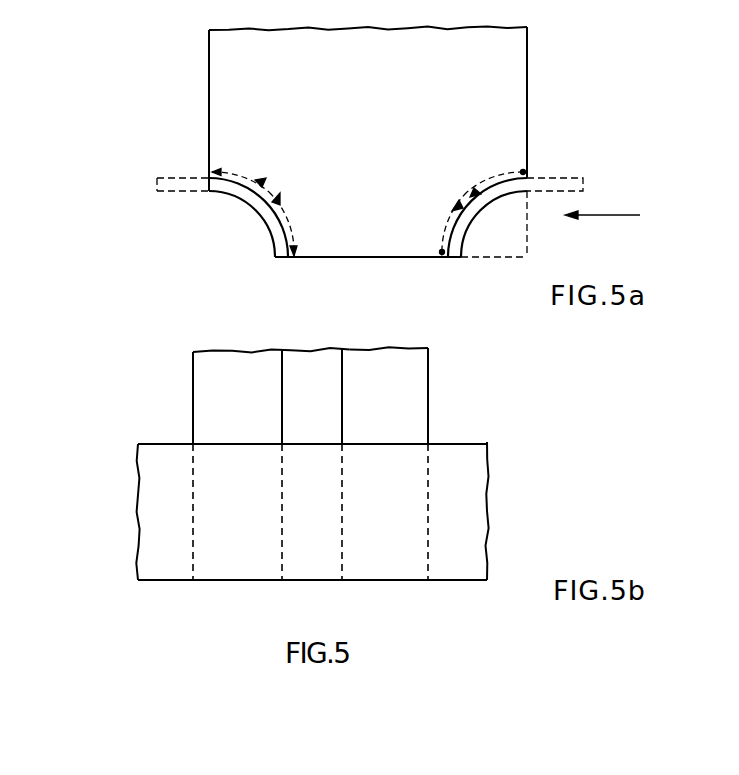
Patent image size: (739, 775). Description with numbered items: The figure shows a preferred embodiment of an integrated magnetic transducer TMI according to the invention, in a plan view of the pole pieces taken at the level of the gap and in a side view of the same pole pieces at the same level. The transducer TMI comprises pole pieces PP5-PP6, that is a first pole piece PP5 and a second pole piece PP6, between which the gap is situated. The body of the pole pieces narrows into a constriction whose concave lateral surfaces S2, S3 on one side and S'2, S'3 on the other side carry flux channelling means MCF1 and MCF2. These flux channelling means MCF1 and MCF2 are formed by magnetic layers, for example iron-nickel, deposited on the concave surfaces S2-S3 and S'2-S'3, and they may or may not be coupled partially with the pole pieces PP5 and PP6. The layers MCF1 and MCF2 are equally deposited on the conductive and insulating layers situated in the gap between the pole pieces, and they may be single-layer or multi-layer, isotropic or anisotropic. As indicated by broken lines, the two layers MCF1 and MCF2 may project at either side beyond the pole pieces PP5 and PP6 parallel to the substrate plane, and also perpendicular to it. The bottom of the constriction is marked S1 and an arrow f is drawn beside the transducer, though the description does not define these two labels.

In FIG. 5A, the integrated magnetic transducer TMI is at (332, 109).
In FIG. 5A, the pole pieces PP5-PP6 is at (305, 109).
In FIG. 5A, the pole piece PP5 is at (368, 109).
In FIG. 5B, the pole piece PP5 is at (215, 352).
In FIG. 5A, the pole piece PP6 is at (218, 92).
In FIG. 5B, the pole piece PP6 is at (405, 348).
In FIG. 5A, the flux channelling means MCF1 is at (481, 209).
In FIG. 5B, the flux channelling means MCF1 is at (488, 463).
In FIG. 5A, the flux channelling means MCF2 is at (247, 203).
In FIG. 5A, the bottom surface S1 is at (352, 258).
In FIG. 5A, the concave lateral surface S2 is at (450, 222).
In FIG. 5A, the concave lateral surface S3 is at (521, 173).
In FIG. 5A, the concave lateral surface S'2 is at (295, 224).
In FIG. 5A, the concave lateral surface S'3 is at (248, 176).
In FIG. 5A, the direction of flux / movement f is at (603, 205).